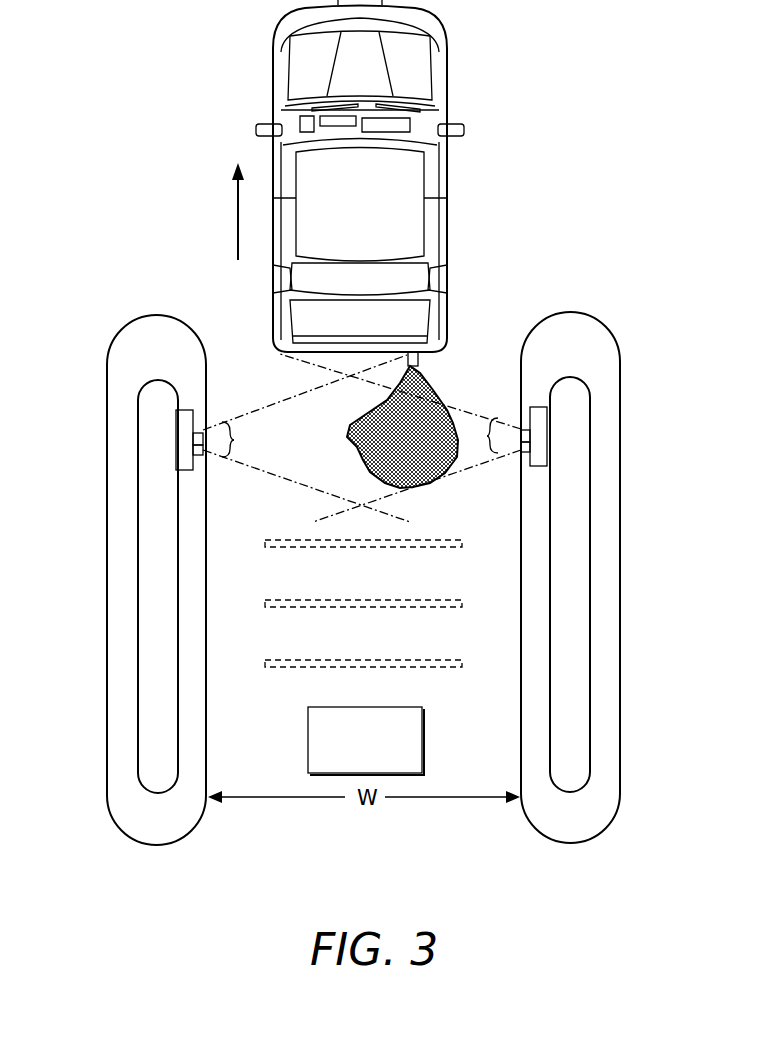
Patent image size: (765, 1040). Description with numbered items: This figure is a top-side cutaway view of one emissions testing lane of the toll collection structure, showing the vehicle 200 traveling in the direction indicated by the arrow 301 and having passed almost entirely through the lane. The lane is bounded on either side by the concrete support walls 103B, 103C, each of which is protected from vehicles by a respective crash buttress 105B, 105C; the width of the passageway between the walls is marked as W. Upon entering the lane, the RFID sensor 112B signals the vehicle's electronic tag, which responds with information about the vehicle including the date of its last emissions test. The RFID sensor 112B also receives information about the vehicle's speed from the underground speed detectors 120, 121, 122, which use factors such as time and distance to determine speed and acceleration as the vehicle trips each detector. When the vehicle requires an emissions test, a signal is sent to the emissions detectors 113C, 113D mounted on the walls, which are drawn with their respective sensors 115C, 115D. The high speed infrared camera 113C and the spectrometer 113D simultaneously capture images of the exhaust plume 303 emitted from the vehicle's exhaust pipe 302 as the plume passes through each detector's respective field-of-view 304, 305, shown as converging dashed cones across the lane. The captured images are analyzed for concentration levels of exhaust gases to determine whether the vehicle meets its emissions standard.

The vehicle 200 is at (458, 181).
The arrow 301 is at (238, 209).
The exhaust pipe 302 is at (420, 360).
The exhaust plume 303 is at (357, 424).
The field-of-view 304 is at (234, 440).
The field-of-view 305 is at (487, 437).
The support wall 103B is at (130, 540).
The support wall 103C is at (596, 540).
The crash buttress 105B is at (157, 845).
The crash buttress 105C is at (570, 843).
The emissions detector 113C is at (203, 452).
The emissions detector 113D is at (520, 452).
The sensor 115C is at (204, 433).
The sensor 115D is at (519, 432).
The underground speed detector 120 is at (420, 658).
The underground speed detector 121 is at (420, 598).
The underground speed detector 122 is at (420, 538).
The RFID sensor 112B is at (422, 738).